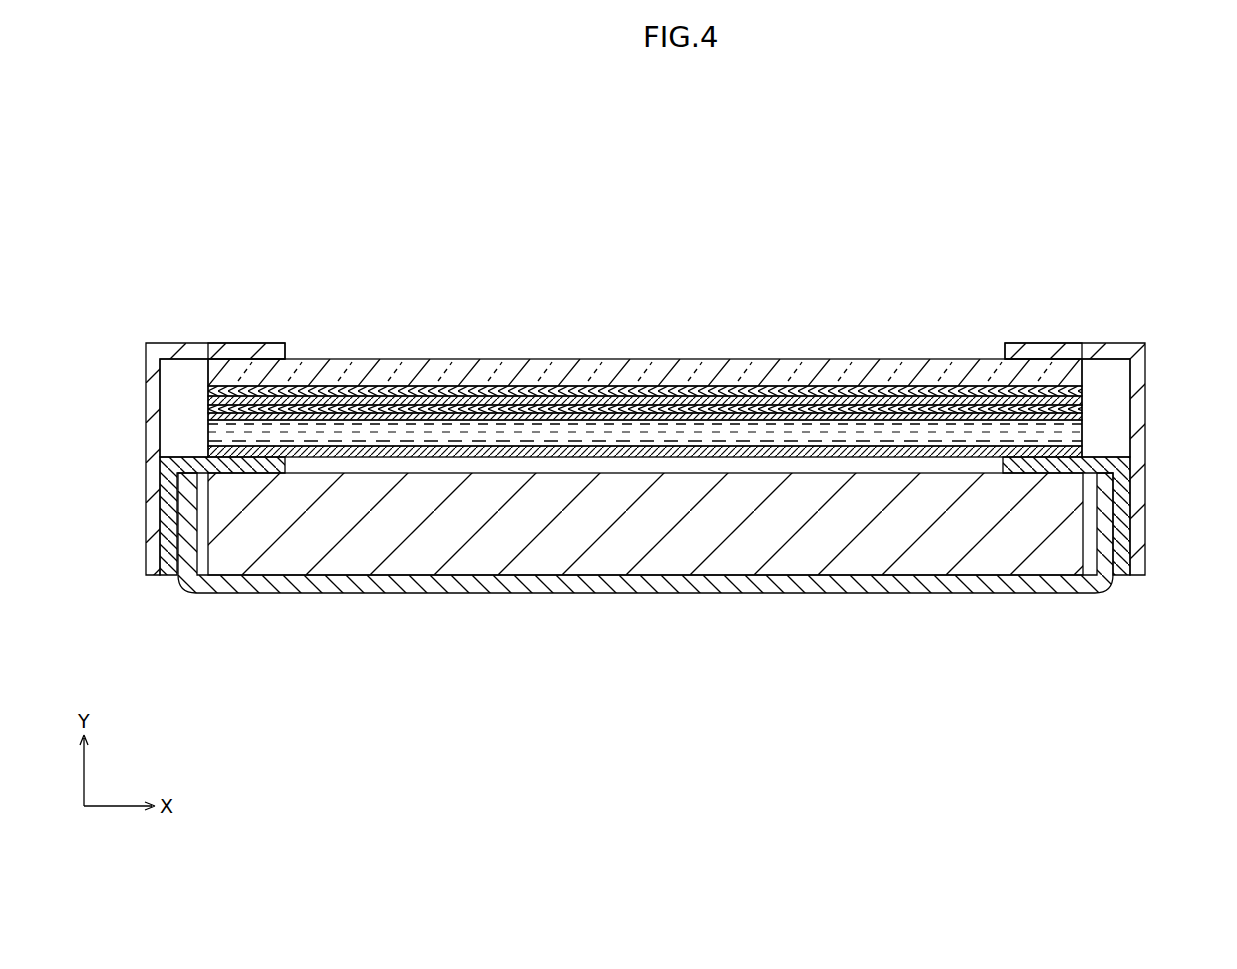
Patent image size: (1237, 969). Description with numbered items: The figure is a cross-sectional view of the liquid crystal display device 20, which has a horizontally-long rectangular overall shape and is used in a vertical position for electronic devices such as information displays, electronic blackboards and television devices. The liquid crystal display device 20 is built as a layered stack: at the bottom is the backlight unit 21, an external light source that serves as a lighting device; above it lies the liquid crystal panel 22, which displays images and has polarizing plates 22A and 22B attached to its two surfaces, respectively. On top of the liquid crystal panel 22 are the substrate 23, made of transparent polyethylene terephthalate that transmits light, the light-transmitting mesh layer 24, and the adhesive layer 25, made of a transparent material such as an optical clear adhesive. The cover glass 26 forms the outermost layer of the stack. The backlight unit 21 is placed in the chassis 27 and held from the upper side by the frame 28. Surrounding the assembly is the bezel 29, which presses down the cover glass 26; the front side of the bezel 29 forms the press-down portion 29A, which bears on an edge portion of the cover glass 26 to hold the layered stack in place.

The liquid crystal display device 20 is at (789, 185).
The backlight unit 21 is at (665, 552).
The liquid crystal panel 22 is at (1082, 433).
The polarizing plate 22A is at (1082, 451).
The polarizing plate 22B is at (1082, 417).
The substrate 23 is at (1082, 409).
The mesh layer 24 is at (1082, 400).
The adhesive layer 25 is at (1082, 391).
The cover glass 26 is at (645, 362).
The chassis 27 is at (773, 588).
The frame 28 is at (183, 463).
The bezel 29 is at (150, 377).
The press-down portion 29A is at (221, 349).